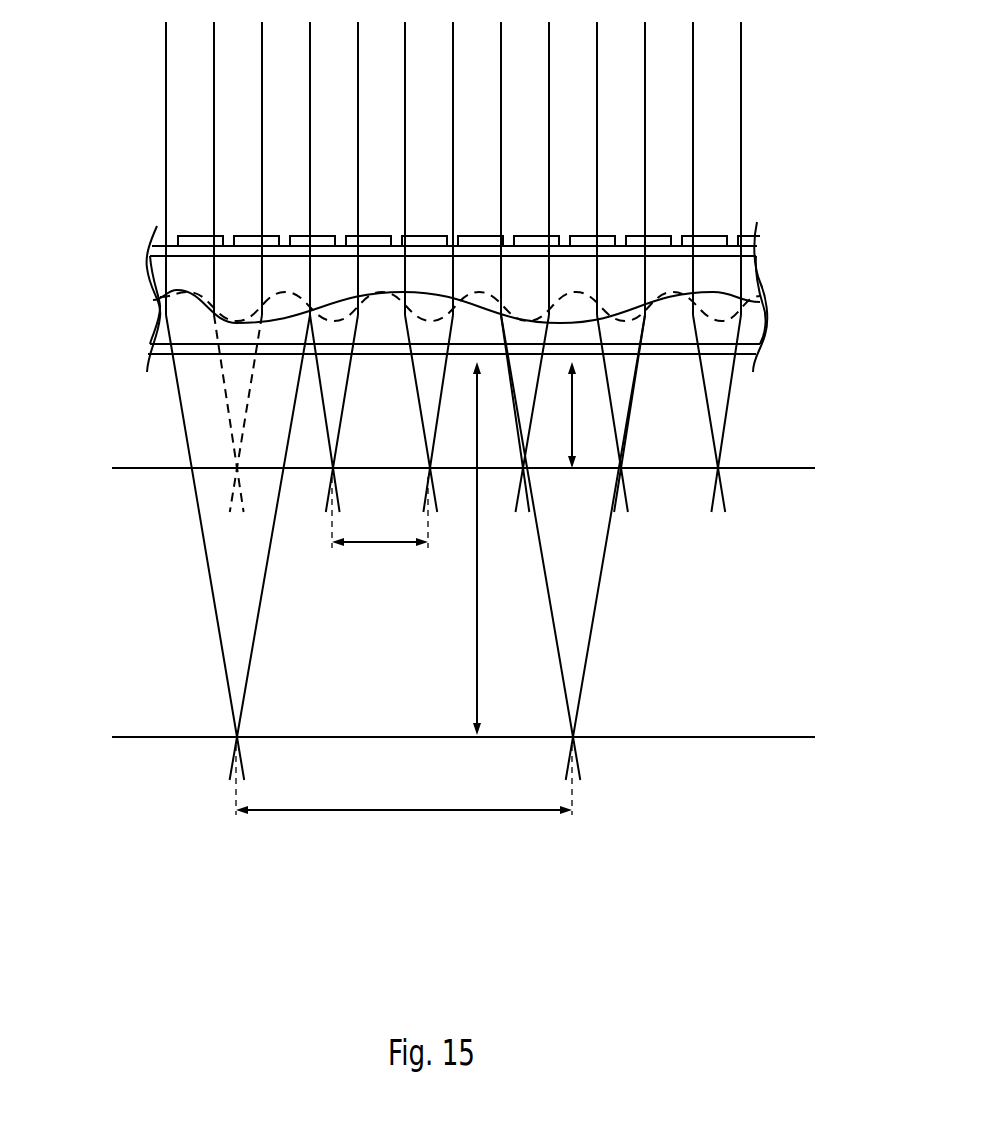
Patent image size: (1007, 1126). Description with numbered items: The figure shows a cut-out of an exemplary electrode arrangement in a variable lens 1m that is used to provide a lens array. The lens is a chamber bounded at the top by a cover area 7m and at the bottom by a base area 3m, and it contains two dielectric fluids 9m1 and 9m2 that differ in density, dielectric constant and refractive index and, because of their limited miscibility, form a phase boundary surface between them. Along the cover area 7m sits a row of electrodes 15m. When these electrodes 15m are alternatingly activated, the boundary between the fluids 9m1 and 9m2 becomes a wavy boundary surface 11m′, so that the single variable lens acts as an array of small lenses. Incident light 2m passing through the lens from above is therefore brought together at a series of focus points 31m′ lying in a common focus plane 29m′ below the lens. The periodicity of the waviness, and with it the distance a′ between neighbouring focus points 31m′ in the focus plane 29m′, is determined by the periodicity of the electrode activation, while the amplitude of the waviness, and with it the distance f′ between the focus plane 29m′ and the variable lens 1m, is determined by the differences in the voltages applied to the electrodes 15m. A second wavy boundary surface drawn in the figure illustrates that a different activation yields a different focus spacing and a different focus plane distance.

The variable lens 1m is at (142, 227).
The incident light rays 2m is at (741, 78).
The base area 3m is at (758, 352).
The cover area 7m is at (745, 252).
The first dielectric fluid 9m1 is at (730, 272).
The second dielectric fluid 9m2 is at (755, 325).
The wavy boundary surface 11m′ is at (180, 291).
The electrodes 15m is at (757, 240).
The focus plane 29m′ is at (438, 469).
The focus points 31m′ is at (232, 470).
The distance between focus plane and variable lens f′ is at (568, 432).
The distance between focus points a′ is at (380, 525).